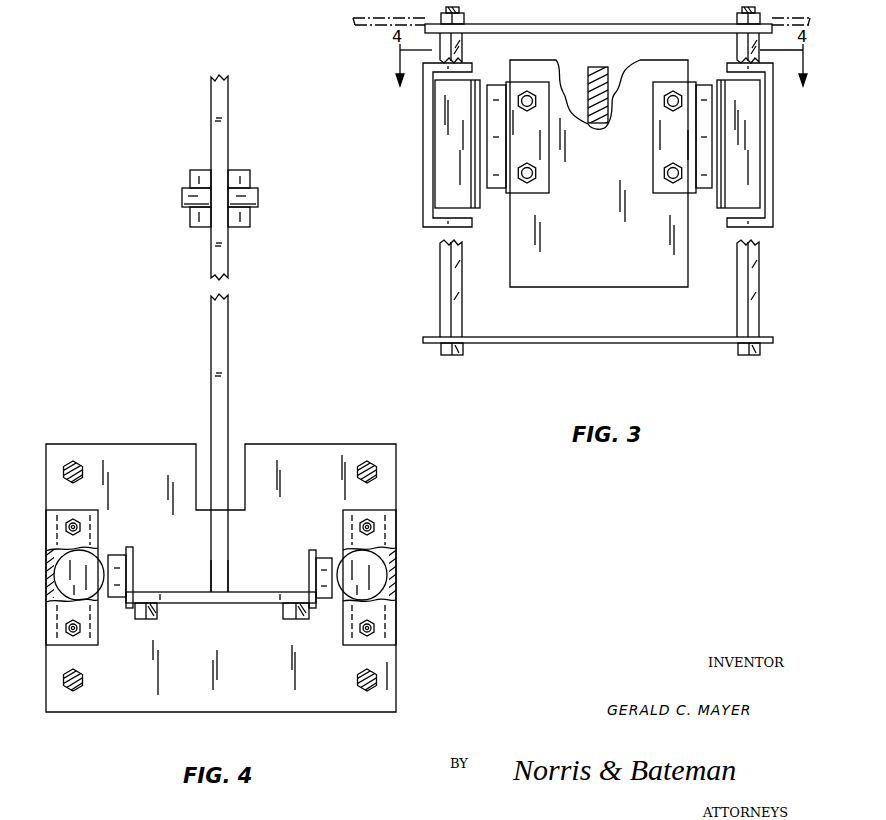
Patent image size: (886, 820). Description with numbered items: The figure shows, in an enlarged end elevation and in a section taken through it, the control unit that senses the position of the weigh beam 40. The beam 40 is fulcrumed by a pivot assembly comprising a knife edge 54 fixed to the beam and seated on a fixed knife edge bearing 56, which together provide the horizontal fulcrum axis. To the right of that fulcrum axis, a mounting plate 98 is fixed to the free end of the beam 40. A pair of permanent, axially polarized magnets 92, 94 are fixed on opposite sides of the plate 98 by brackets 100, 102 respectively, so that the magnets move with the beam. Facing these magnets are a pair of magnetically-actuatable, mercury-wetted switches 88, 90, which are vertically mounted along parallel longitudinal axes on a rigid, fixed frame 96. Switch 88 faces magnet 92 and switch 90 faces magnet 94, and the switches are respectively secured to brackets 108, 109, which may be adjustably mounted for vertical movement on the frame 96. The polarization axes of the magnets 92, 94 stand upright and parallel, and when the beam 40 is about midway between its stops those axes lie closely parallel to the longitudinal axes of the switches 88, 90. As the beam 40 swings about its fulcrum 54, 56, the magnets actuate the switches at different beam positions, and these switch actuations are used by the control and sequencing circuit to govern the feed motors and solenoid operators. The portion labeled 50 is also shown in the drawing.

In FIG. 4, the beam 40 is at (222, 124).
In FIG. 4, the knife edge 54 is at (252, 195).
In FIG. 4, the knife edge bearing 56 is at (200, 180).
In FIG. 3, the shaft section 50 is at (599, 68).
In FIG. 4, the shaft section 50 is at (222, 556).
In FIG. 3, the switch 88 is at (446, 190).
In FIG. 4, the switch 88 is at (92, 602).
In FIG. 3, the switch 90 is at (750, 180).
In FIG. 4, the switch 90 is at (375, 594).
In FIG. 3, the magnet 92 is at (496, 188).
In FIG. 4, the magnet 92 is at (118, 560).
In FIG. 3, the magnet 94 is at (708, 188).
In FIG. 4, the magnet 94 is at (325, 556).
In FIG. 3, the frame 96 is at (615, 344).
In FIG. 4, the frame 96 is at (240, 700).
In FIG. 3, the mounting plate 98 is at (608, 241).
In FIG. 4, the mounting plate 98 is at (246, 605).
In FIG. 3, the bracket 100 is at (527, 92).
In FIG. 4, the bracket 100 is at (133, 573).
In FIG. 3, the bracket 102 is at (665, 143).
In FIG. 4, the bracket 102 is at (309, 570).
In FIG. 3, the bracket 108 is at (428, 223).
In FIG. 4, the bracket 108 is at (94, 646).
In FIG. 3, the bracket 109 is at (772, 224).
In FIG. 4, the bracket 109 is at (350, 645).